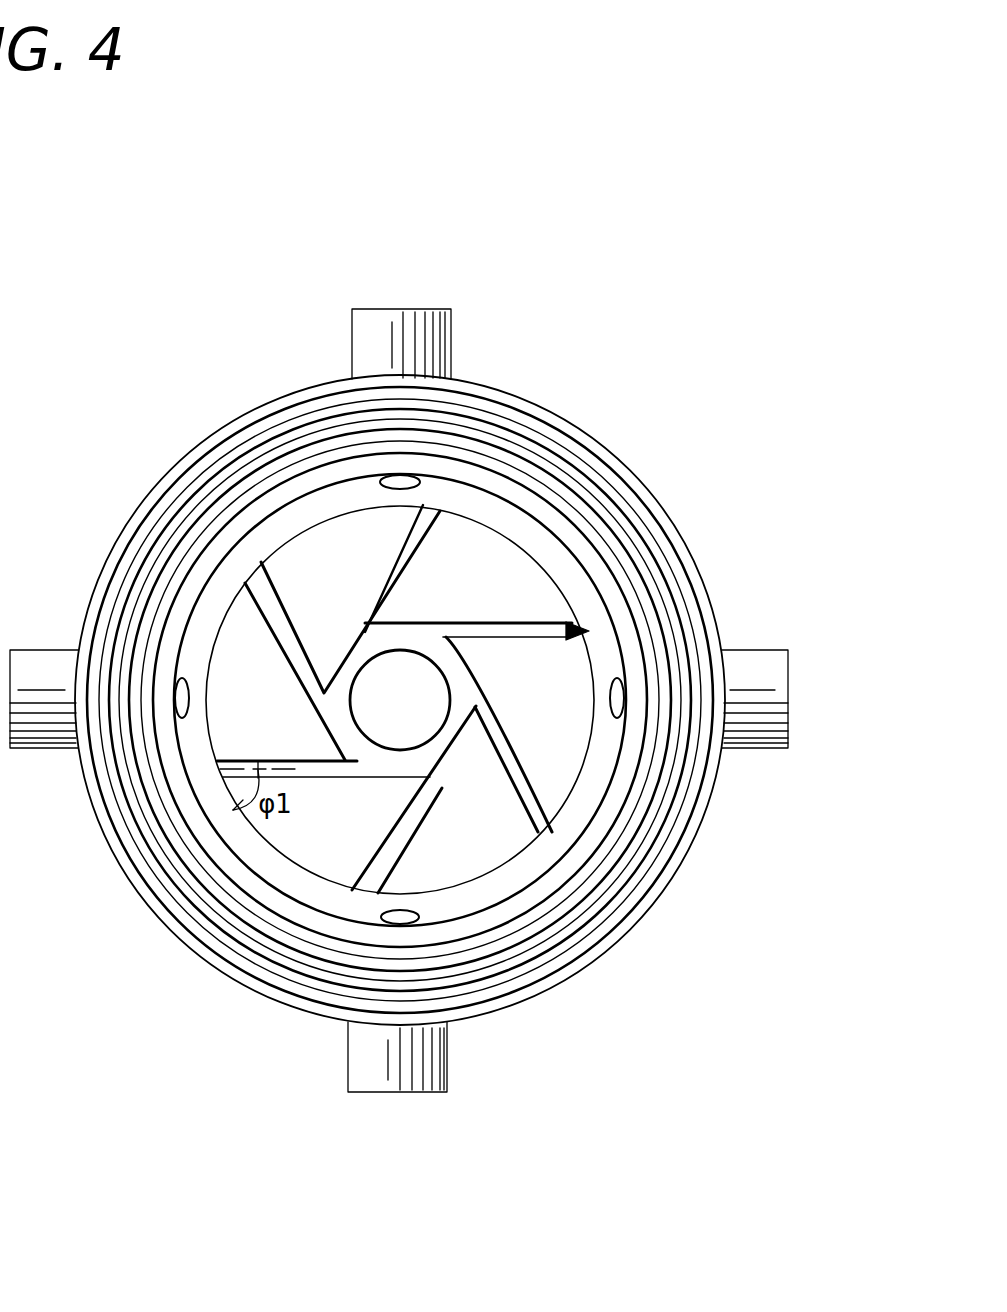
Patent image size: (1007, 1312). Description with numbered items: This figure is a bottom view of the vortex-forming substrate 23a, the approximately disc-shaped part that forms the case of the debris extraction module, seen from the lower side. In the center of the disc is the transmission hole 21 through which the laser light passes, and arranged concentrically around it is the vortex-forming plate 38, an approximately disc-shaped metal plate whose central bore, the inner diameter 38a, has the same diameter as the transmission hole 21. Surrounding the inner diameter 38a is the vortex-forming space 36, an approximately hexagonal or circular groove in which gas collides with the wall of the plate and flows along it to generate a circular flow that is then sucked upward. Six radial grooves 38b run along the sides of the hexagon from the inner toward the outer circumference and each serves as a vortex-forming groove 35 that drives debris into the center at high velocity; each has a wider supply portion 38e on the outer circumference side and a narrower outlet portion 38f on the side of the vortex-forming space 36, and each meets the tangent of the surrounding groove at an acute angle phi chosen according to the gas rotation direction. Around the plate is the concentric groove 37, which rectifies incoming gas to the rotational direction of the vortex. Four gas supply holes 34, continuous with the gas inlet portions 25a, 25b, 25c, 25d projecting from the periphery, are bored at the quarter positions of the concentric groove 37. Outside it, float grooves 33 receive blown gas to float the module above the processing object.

The transmission hole 21 is at (405, 700).
The vortex-forming substrate 23a is at (580, 992).
The gas inlet portion 25a is at (42, 735).
The gas inlet portion 25b is at (397, 1058).
The gas inlet portion 25c is at (755, 680).
The gas inlet portion 25d is at (398, 323).
The float grooves 33 is at (633, 793).
The gas supply hole 34 is at (398, 480).
The vortex-forming groove 35 is at (590, 630).
The vortex-forming space 36 is at (397, 637).
The concentric groove 37 is at (492, 505).
The vortex-forming plate 38 is at (539, 717).
The inner diameter 38a is at (437, 730).
The radial groove 38b is at (422, 518).
The supply portion 38e is at (535, 810).
The outlet portion 38f is at (490, 722).